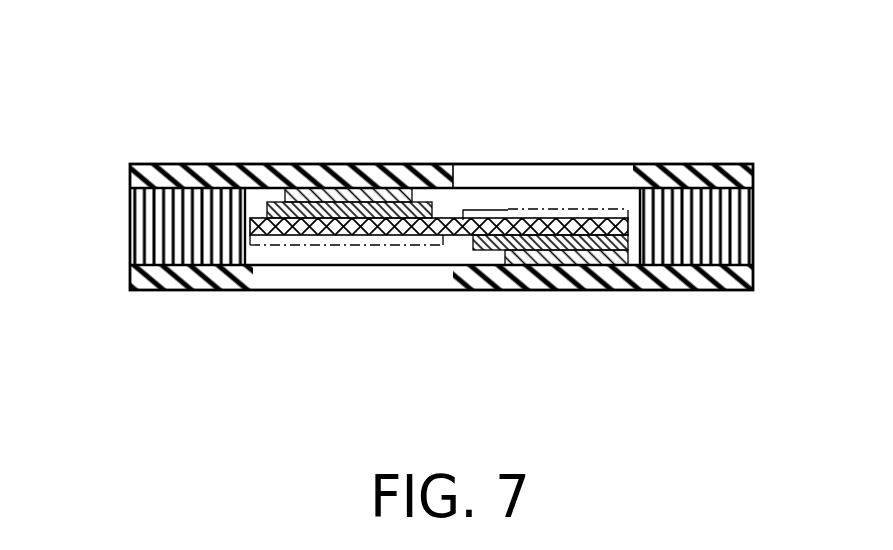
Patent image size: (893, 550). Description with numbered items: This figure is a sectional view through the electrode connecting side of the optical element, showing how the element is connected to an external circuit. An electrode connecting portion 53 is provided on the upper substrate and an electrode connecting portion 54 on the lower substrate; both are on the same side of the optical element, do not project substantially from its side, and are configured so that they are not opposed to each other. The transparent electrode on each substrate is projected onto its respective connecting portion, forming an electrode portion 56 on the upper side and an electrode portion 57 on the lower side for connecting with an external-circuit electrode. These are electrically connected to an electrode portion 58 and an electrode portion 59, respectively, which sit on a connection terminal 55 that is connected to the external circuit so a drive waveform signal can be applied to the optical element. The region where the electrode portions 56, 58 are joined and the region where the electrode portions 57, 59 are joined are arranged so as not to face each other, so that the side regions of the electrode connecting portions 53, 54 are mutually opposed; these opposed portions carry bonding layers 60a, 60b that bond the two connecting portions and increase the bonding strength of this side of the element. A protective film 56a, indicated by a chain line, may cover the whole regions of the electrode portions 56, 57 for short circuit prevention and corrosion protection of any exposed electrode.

The electrode connecting portion 53 is at (223, 166).
The electrode connecting portion 54 is at (190, 277).
The connection terminal 55 is at (507, 220).
The electrode portion 56 is at (372, 175).
The protective film 56a is at (471, 212).
The electrode portion 57 is at (563, 268).
The electrode portion 58 is at (333, 208).
The electrode portion 59 is at (595, 222).
The bonding layer 60a is at (718, 217).
The bonding layer 60b is at (162, 225).